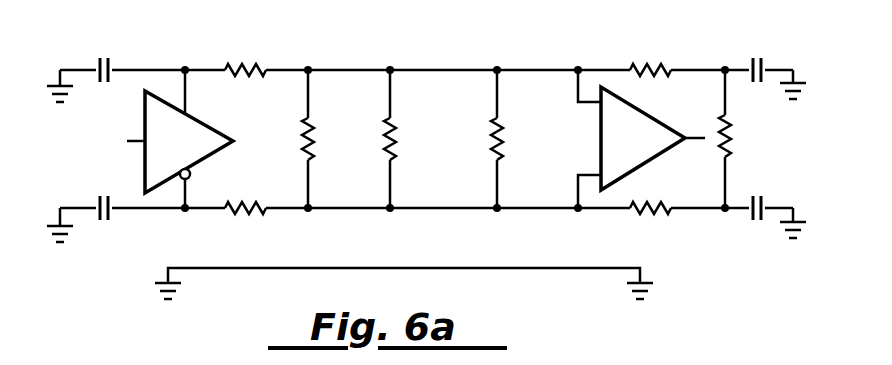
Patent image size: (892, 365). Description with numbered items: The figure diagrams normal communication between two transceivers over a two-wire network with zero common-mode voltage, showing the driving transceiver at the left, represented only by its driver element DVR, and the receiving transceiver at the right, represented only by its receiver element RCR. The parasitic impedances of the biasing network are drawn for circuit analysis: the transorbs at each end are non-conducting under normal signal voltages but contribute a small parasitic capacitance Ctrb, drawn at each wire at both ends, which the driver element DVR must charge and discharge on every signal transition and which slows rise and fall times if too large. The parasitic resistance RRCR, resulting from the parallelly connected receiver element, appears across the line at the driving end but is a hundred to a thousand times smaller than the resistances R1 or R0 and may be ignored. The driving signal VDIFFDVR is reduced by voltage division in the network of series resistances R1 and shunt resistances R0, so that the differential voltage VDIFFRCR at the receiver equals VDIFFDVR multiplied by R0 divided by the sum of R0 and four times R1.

The driver element DVR is at (180, 139).
The receiver element RCR is at (641, 139).
The parasitic capacitance Ctrb is at (428, 142).
The resistance R1 is at (448, 142).
The parasitic resistance of the receiver element RRCR is at (332, 139).
The resistance R0 is at (458, 139).
The differential driver voltage VDIFFDVR is at (247, 142).
The differential receiver voltage VDIFFRCR is at (580, 142).